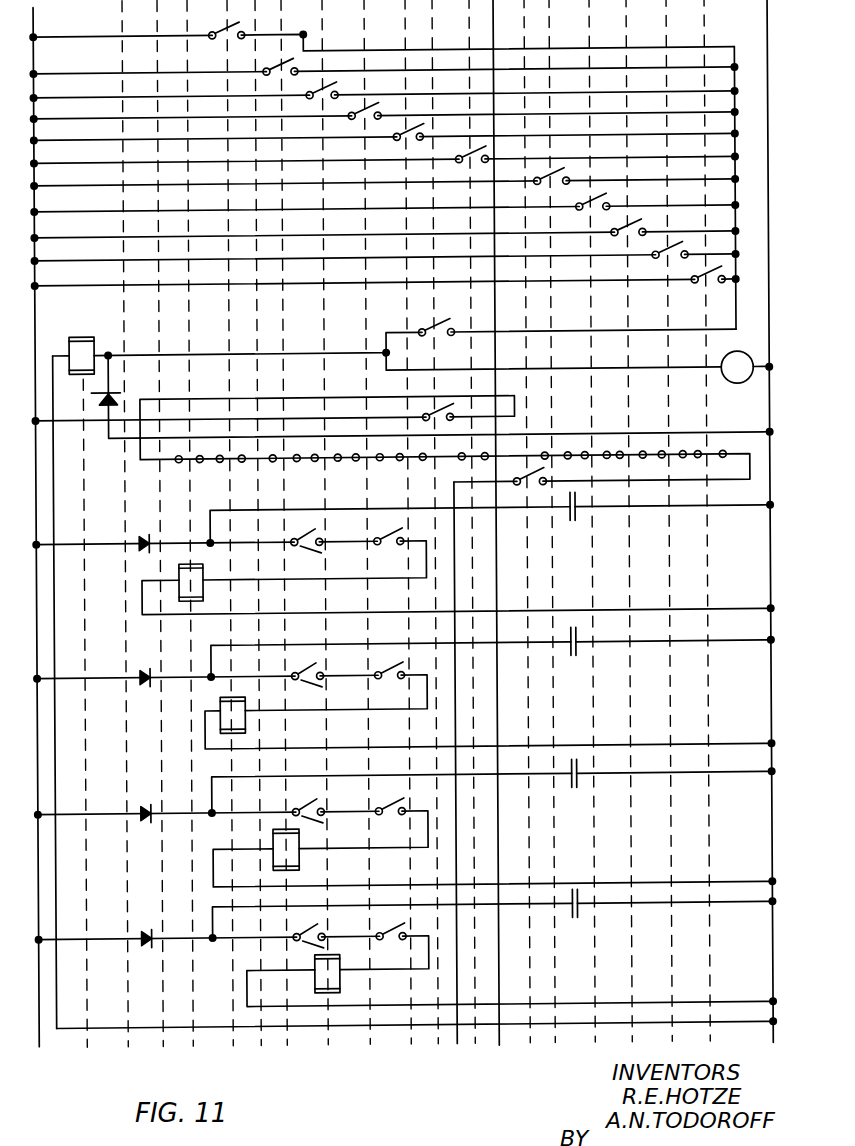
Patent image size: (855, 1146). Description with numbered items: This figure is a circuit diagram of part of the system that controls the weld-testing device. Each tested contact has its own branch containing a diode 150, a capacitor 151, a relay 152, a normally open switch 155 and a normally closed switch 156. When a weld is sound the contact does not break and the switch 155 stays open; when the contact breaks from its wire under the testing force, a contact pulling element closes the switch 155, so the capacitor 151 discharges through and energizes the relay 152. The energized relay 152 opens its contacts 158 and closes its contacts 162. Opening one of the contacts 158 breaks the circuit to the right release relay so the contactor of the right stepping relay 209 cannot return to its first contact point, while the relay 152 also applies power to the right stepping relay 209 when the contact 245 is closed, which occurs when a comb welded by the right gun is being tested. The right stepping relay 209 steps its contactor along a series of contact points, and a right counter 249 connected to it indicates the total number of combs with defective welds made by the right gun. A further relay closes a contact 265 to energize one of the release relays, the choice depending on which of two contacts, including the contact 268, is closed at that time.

The contacts 162 is at (239, 24).
The right stepping relay 209 is at (79, 338).
The contact 245 is at (436, 328).
The contact 268 is at (436, 410).
The right counter 249 is at (736, 391).
The contacts 158 is at (288, 463).
The contact 265 is at (538, 480).
The diode 150 is at (148, 542).
The capacitor 151 is at (567, 525).
The relay 152 is at (196, 589).
The normally open switch 155 is at (310, 518).
The normally closed switch 156 is at (392, 530).